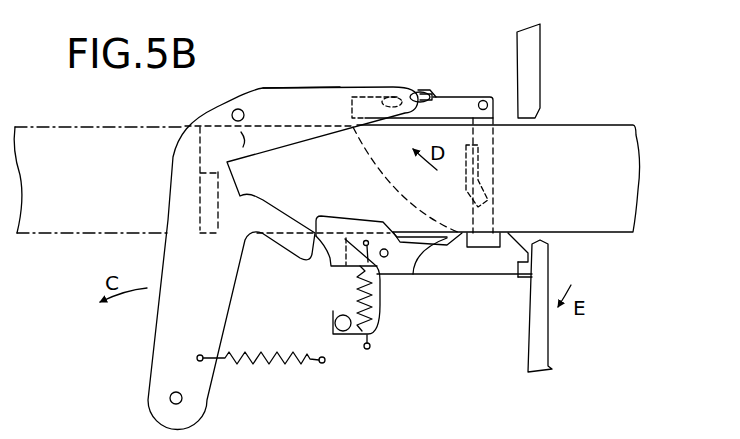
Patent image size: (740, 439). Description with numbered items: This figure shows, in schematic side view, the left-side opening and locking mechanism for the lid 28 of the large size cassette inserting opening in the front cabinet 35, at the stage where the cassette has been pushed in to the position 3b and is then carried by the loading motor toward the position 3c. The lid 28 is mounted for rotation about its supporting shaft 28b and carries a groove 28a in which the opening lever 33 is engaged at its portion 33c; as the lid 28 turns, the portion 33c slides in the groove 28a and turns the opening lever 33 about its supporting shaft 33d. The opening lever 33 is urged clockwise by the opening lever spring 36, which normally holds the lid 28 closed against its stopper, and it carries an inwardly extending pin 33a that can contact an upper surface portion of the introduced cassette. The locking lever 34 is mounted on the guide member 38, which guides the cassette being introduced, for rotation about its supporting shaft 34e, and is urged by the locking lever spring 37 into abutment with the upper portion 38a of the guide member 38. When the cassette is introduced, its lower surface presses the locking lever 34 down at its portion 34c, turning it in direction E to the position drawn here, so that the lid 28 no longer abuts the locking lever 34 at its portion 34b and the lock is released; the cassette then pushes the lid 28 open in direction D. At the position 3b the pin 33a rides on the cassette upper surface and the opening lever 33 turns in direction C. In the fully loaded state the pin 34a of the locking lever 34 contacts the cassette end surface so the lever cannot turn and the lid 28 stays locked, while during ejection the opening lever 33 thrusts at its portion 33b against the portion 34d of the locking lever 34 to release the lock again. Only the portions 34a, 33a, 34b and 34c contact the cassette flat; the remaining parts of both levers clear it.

The large size cassette position 3b is at (617, 140).
The large size cassette position 3c is at (80, 146).
The lid for large size cassette 28 is at (460, 100).
The groove of lid 28a is at (402, 92).
The supporting shaft of lid 28b is at (484, 100).
The opening lever 33 is at (165, 345).
The pin of opening lever 33a is at (231, 109).
The thrusting portion of opening lever 33b is at (278, 203).
The engaging portion of opening lever 33c is at (398, 92).
The supporting shaft of opening lever 33d is at (169, 397).
The locking lever 34 is at (412, 277).
The pin of locking lever 34a is at (343, 332).
The lid abutment portion of locking lever 34b is at (455, 243).
The pressed portion of locking lever 34c is at (510, 233).
The thrust portion of locking lever 34d is at (318, 240).
The supporting shaft of locking lever 34e is at (386, 257).
The front cabinet 35 is at (533, 43).
The opening lever spring 36 is at (310, 367).
The locking lever spring 37 is at (371, 349).
The guide member 38 is at (352, 265).
The upper portion of guide member 38a is at (527, 262).